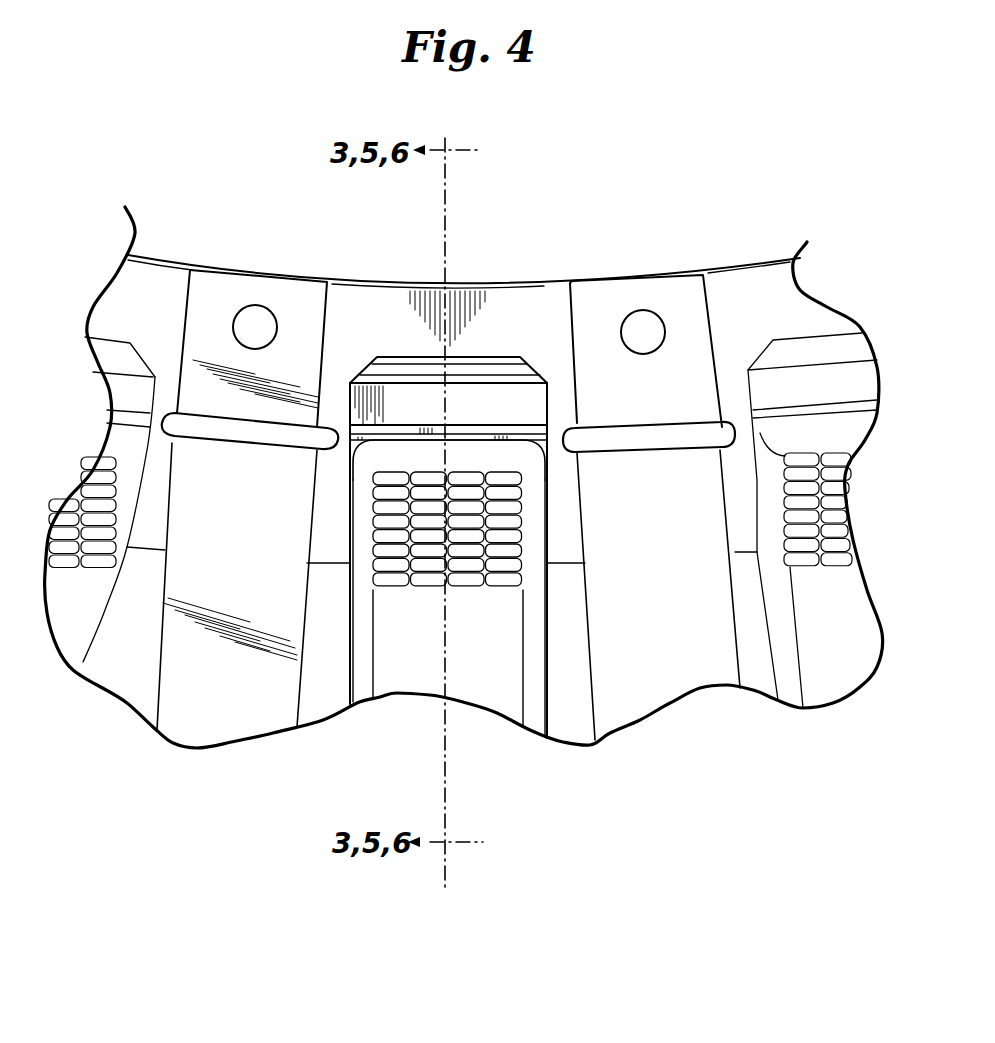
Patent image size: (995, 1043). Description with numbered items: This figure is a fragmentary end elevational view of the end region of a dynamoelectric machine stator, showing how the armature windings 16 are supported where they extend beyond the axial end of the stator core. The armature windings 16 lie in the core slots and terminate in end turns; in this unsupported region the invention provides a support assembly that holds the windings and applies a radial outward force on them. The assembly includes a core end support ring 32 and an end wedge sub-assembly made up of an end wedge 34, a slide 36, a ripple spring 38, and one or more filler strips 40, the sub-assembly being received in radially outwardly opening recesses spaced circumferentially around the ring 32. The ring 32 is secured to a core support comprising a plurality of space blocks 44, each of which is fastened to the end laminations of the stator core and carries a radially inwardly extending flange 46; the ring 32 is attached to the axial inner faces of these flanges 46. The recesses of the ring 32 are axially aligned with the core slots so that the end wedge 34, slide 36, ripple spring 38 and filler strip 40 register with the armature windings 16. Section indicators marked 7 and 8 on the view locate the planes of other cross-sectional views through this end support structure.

The armature windings 16 is at (431, 566).
The core end support ring 32 is at (538, 302).
The end wedge 34 is at (395, 378).
The slide 36 is at (498, 413).
The ripple spring 38 is at (556, 428).
The filler strip 40 is at (365, 437).
The space blocks 44 is at (660, 670).
The flange 46 is at (682, 290).
The section line 7- 7 is at (695, 120).
The section line 8- 8 is at (191, 870).